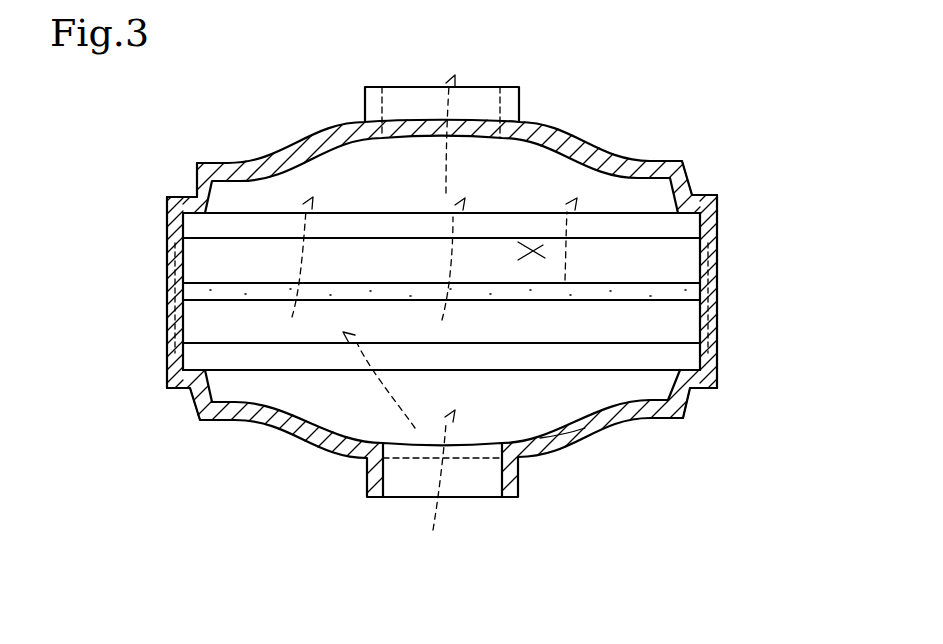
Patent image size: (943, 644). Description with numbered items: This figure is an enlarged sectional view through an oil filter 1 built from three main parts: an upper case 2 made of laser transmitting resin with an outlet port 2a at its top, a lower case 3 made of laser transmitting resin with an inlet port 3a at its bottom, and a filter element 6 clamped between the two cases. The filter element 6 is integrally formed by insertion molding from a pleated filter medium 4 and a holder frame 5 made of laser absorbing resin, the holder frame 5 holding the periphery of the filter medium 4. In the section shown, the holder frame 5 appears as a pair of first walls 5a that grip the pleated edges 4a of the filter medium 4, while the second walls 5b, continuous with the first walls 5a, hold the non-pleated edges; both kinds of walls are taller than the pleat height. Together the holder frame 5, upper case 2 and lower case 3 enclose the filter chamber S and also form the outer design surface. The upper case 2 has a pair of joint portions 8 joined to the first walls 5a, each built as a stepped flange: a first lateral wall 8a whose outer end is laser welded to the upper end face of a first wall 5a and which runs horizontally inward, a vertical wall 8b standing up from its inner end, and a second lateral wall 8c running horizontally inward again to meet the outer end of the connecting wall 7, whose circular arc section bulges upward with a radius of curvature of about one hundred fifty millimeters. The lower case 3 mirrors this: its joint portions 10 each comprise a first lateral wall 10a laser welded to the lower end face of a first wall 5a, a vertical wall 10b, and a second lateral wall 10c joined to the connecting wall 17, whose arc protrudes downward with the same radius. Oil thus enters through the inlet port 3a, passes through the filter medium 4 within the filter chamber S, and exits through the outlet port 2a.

The oil filter 1 is at (444, 316).
The upper case 2 is at (442, 143).
The outlet port 2a is at (382, 116).
The lower case 3 is at (442, 467).
The inlet port 3a is at (383, 470).
The filter medium 4 is at (446, 225).
The pleated edges 4a is at (167, 325).
The holder frame 5 is at (442, 239).
The first walls 5a is at (167, 268).
The second walls 5b is at (284, 213).
The filter element 6 is at (157, 360).
The connecting wall 7 is at (525, 125).
The joint portions 8 is at (459, 142).
The first lateral wall 8a is at (736, 176).
The vertical wall 8b is at (690, 172).
The second lateral wall 8c is at (670, 157).
The joint portions 10 is at (468, 446).
The first lateral wall 10a is at (718, 385).
The vertical wall 10b is at (687, 394).
The second lateral wall 10c is at (678, 453).
The connecting wall 17 is at (562, 440).
The filter chamber S is at (531, 251).